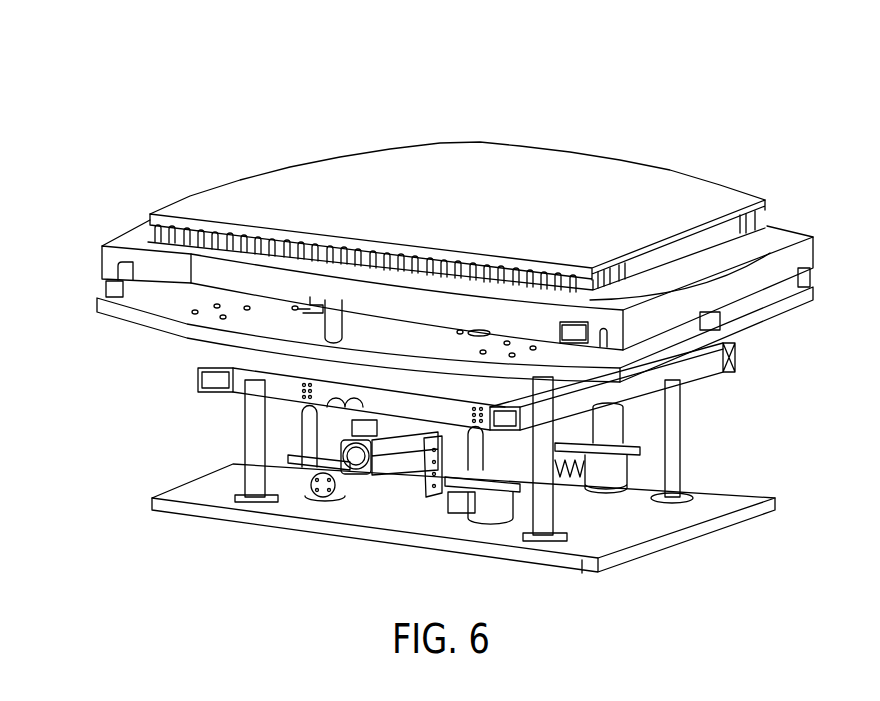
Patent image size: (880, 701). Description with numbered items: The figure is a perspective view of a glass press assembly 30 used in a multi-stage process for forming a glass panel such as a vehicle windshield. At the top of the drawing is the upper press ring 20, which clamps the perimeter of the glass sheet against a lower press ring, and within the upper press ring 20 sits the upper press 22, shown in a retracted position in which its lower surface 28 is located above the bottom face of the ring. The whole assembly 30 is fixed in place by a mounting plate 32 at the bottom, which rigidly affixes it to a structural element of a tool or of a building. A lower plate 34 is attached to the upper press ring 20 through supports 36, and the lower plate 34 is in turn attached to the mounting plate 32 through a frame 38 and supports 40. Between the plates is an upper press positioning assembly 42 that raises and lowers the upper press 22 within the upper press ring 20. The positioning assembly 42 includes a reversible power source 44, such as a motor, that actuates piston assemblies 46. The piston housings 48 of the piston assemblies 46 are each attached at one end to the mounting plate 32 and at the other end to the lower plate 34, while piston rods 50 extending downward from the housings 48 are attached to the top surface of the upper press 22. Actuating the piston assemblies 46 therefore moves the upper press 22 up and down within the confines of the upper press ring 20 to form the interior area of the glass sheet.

The upper press ring 20 is at (758, 267).
The upper press 22 is at (150, 228).
The lower surface 28 is at (513, 208).
The glass press assembly 30 is at (124, 376).
The mounting plate 32 is at (712, 532).
The lower plate 34 is at (782, 306).
The supports 36 is at (106, 290).
The frame 38 is at (722, 366).
The supports 40 is at (252, 428).
The upper press positioning assembly 42 is at (607, 476).
The reversible power source 44 is at (400, 486).
The piston assemblies 46 is at (487, 507).
The piston housings 48 is at (608, 417).
The piston rods 50 is at (305, 298).